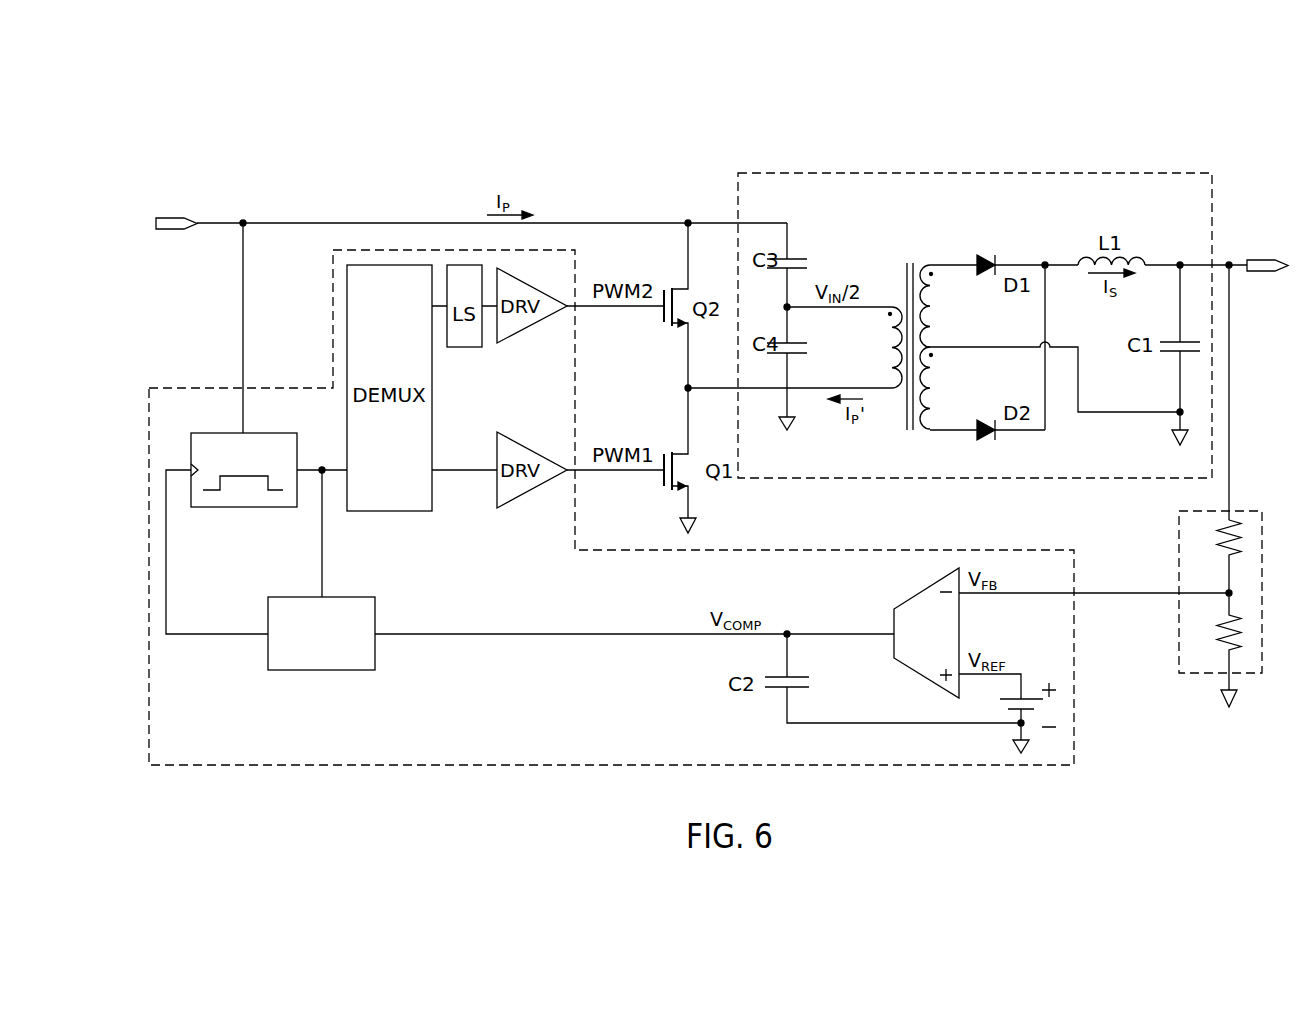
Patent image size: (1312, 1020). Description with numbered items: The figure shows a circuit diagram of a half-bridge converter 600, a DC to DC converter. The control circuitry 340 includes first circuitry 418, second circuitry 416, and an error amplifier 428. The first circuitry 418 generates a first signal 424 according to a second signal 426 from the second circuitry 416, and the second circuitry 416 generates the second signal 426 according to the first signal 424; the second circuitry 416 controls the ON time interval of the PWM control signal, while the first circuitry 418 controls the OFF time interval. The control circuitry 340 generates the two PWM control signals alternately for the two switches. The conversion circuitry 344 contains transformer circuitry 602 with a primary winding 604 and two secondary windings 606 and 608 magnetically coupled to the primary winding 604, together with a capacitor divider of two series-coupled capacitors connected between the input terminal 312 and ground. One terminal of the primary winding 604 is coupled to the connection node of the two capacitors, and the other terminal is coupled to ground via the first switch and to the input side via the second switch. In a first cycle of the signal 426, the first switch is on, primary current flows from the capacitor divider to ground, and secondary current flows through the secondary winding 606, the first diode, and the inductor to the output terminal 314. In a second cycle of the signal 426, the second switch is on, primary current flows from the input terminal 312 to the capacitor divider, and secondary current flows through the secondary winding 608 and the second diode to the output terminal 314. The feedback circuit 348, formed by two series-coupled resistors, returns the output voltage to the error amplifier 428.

The half-bridge converter 600 is at (232, 152).
The input terminal 312 is at (177, 231).
The output terminal 314 is at (1258, 273).
The control circuitry 340 is at (206, 388).
The conversion circuitry 344 is at (1077, 173).
The feedback circuit 348 is at (1179, 550).
The second circuitry 416 is at (228, 432).
The first circuitry 418 is at (321, 633).
The first signal 424 is at (207, 634).
The second signal 426 is at (310, 469).
The error amplifier 428 is at (913, 598).
The transformer circuitry 602 is at (912, 329).
The primary winding 604 is at (891, 302).
The secondary winding 606 is at (926, 264).
The secondary winding 608 is at (926, 431).